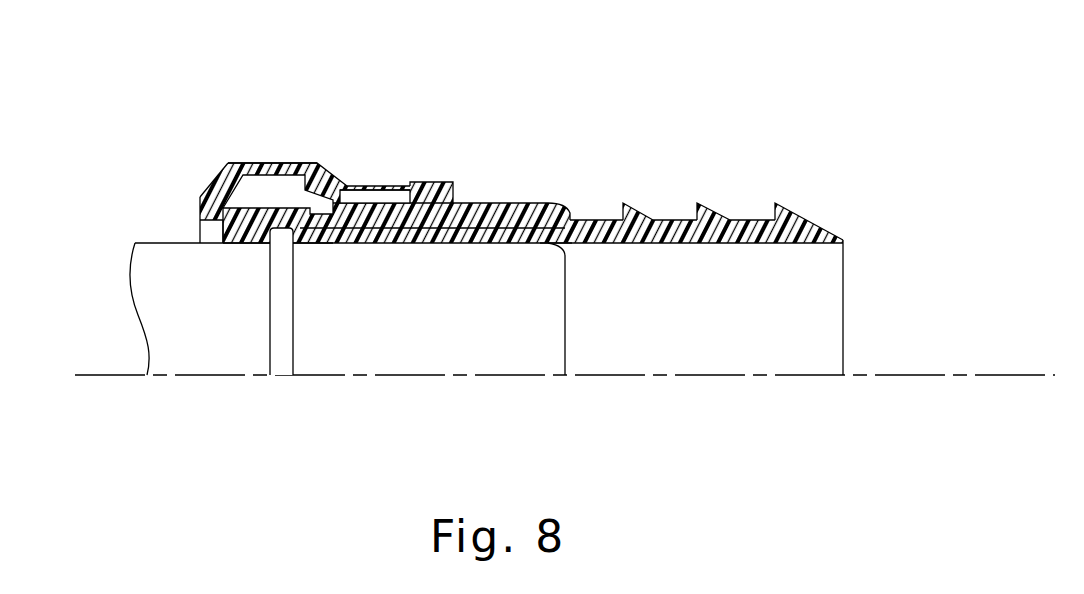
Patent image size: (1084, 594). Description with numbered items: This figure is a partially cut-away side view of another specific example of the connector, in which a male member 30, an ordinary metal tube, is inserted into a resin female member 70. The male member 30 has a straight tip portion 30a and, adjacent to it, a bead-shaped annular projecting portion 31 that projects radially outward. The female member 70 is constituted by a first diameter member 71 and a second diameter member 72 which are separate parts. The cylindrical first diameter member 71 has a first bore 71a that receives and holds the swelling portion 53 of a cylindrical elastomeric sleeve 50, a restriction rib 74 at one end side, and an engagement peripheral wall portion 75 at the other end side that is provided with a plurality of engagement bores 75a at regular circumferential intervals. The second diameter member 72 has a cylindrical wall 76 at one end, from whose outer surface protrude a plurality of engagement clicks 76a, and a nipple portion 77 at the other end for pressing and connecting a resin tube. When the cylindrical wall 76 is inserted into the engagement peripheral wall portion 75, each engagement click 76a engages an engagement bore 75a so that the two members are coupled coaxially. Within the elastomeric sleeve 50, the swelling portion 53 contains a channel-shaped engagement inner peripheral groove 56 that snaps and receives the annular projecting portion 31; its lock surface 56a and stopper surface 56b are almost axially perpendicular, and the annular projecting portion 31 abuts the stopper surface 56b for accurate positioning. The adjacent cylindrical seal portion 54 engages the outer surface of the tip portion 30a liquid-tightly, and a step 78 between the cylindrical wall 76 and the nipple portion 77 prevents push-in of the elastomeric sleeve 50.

The male member 30 is at (136, 239).
The tip portion 30a is at (462, 363).
The annular projecting portion 31 is at (278, 345).
The elastomeric sleeve 50 is at (216, 178).
The swelling portion 53 is at (330, 161).
The seal portion 54 is at (423, 240).
The engagement inner peripheral groove 56 is at (285, 161).
The lock surface 56a is at (270, 245).
The stopper surface 56b is at (293, 248).
The female member 70 is at (236, 149).
The first diameter member 71 is at (258, 156).
The first bore 71a is at (403, 143).
The second diameter member 72 is at (566, 197).
The restriction rib 74 is at (200, 197).
The engagement peripheral wall portion 75 is at (453, 185).
The engagement bore 75a is at (410, 185).
The cylindrical wall 76 is at (547, 200).
The engagement click 76a is at (406, 192).
The nipple portion 77 is at (748, 230).
The step 78 is at (547, 243).